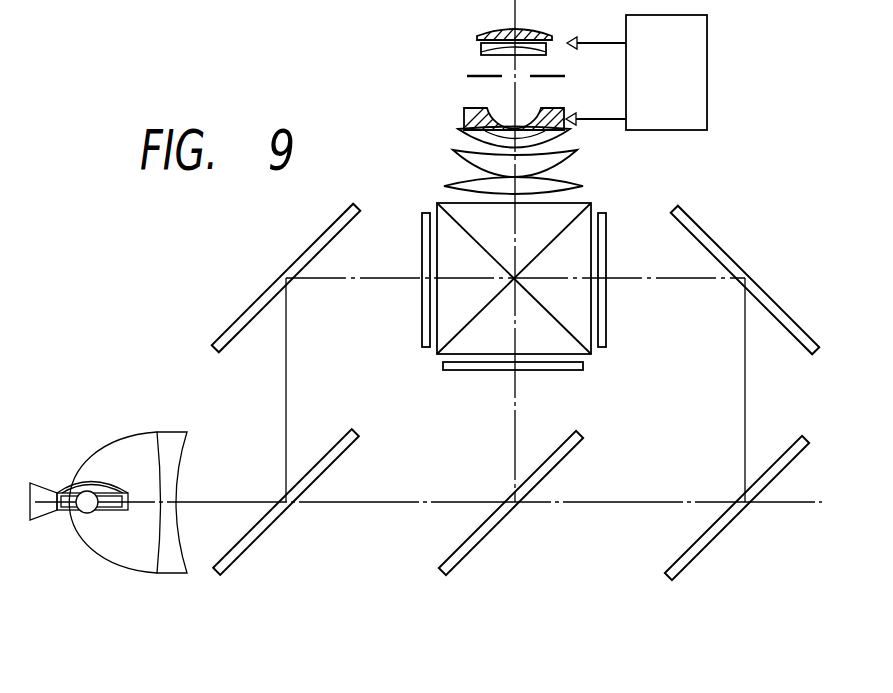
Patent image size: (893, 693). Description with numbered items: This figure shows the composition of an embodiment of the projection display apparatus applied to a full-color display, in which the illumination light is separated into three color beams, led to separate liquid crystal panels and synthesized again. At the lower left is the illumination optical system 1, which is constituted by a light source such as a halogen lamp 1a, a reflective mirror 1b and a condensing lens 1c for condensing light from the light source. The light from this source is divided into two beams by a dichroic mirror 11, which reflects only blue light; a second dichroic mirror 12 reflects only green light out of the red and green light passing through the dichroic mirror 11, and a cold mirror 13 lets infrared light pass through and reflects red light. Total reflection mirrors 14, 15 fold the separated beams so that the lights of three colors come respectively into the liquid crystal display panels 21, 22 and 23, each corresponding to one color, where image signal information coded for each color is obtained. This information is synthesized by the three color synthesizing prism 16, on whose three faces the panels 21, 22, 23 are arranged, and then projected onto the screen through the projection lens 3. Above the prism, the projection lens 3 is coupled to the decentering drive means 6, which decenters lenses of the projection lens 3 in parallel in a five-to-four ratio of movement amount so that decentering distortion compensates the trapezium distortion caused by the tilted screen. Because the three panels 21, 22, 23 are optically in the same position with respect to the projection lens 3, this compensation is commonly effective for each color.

The illumination optical system 1 is at (136, 512).
The lamp 1a is at (83, 513).
The reflector 1b is at (135, 432).
The lens 1c is at (173, 450).
The projection lens 3 is at (430, 17).
The decentering drive means 6 is at (708, 88).
The dichroic mirror 11 is at (272, 525).
The dichroic mirror 12 is at (492, 532).
The cold mirror 13 is at (707, 548).
The total reflection mirror 14 is at (270, 285).
The total reflection mirror 15 is at (778, 303).
The three color synthesizing prism 16 is at (584, 204).
The liquid crystal display panel 21 is at (420, 234).
The liquid crystal display panel 22 is at (480, 371).
The liquid crystal display panel 23 is at (607, 235).